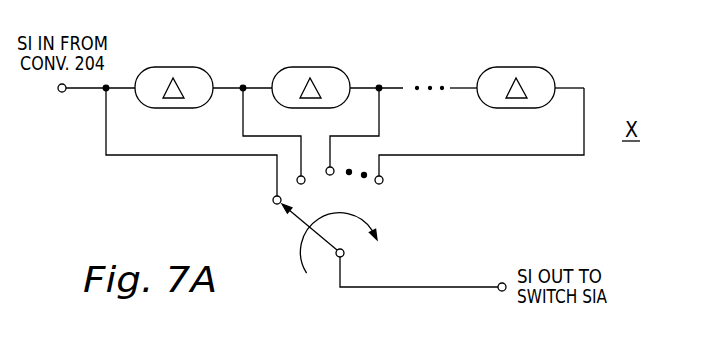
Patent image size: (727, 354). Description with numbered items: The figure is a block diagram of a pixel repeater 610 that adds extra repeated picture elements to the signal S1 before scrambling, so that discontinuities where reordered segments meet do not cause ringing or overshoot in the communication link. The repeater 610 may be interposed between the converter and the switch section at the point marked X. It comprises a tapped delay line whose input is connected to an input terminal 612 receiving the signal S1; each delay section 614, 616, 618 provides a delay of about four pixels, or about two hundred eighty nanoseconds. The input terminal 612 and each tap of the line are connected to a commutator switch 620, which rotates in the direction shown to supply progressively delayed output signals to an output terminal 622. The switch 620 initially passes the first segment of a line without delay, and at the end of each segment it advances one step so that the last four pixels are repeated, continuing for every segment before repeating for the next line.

The pixel repeater 610 is at (415, 48).
The input terminal 612 is at (61, 93).
The delay section 614 is at (152, 108).
The delay section 616 is at (310, 108).
The delay section 618 is at (512, 108).
The commutator switch 620 is at (433, 258).
The output terminal 622 is at (498, 292).